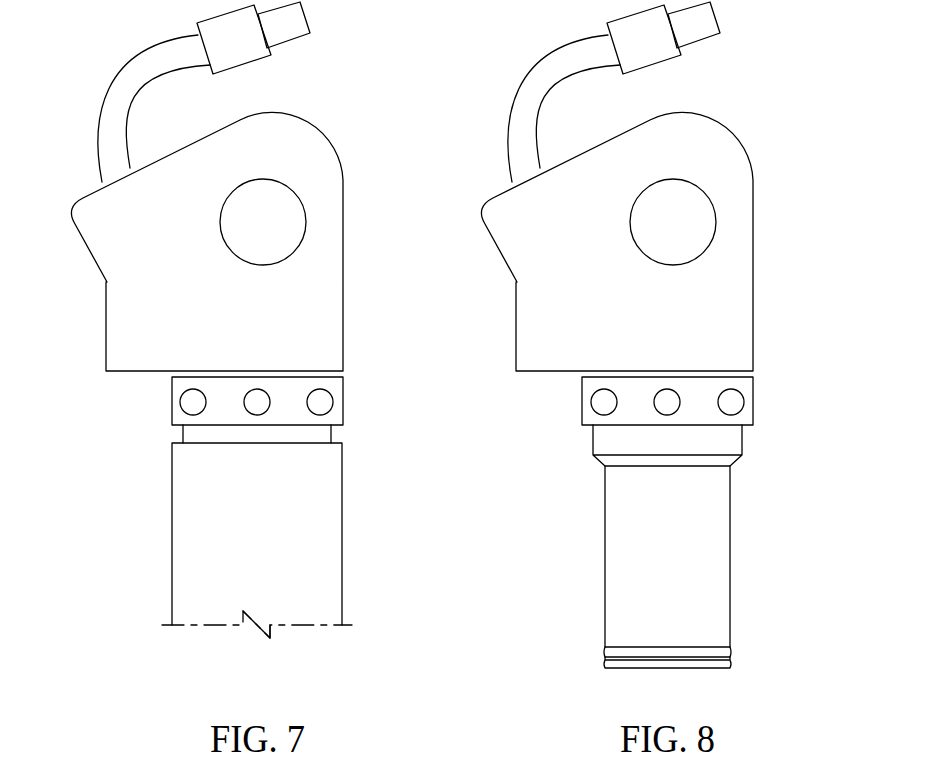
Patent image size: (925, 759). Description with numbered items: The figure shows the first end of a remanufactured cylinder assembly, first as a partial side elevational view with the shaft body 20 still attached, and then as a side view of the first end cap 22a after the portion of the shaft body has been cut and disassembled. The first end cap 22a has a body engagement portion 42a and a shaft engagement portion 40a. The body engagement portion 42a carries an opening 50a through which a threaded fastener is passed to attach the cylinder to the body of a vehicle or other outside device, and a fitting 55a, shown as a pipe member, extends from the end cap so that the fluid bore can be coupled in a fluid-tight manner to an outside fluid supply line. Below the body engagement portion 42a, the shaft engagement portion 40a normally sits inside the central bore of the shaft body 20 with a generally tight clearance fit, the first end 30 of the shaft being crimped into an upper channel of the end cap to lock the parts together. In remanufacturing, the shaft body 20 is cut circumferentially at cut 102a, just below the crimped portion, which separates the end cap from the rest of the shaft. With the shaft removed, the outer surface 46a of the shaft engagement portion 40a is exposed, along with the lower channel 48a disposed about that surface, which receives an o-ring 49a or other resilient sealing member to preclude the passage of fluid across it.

In FIG. 7, the shaft body 20 is at (248, 531).
In FIG. 7, the first end cap 22a is at (322, 270).
In FIG. 8, the first end cap 22a is at (651, 241).
In FIG. 7, the first end of the shaft 30 is at (328, 532).
In FIG. 8, the shaft engagement portion 40a is at (670, 549).
In FIG. 7, the body engagement portion 42a is at (217, 285).
In FIG. 8, the body engagement portion 42a is at (627, 285).
In FIG. 8, the outer surface 46a is at (576, 556).
In FIG. 8, the lower channel 48a is at (667, 628).
In FIG. 8, the o-ring 49a is at (699, 660).
In FIG. 7, the opening 50a is at (268, 203).
In FIG. 8, the opening 50a is at (719, 188).
In FIG. 7, the fitting 55a is at (104, 65).
In FIG. 8, the fitting 55a is at (585, 92).
In FIG. 7, the cut 102a is at (334, 427).
In FIG. 8, the cut 102a is at (701, 418).